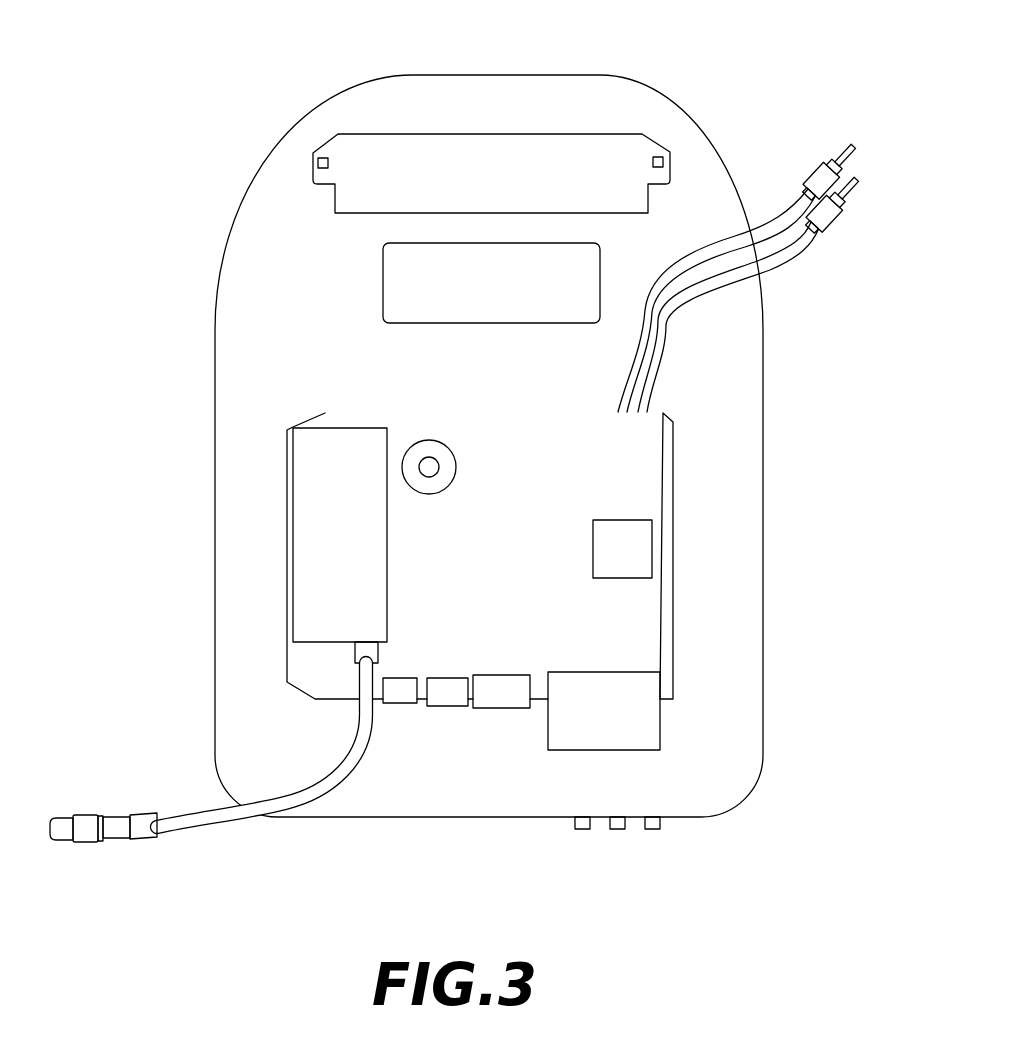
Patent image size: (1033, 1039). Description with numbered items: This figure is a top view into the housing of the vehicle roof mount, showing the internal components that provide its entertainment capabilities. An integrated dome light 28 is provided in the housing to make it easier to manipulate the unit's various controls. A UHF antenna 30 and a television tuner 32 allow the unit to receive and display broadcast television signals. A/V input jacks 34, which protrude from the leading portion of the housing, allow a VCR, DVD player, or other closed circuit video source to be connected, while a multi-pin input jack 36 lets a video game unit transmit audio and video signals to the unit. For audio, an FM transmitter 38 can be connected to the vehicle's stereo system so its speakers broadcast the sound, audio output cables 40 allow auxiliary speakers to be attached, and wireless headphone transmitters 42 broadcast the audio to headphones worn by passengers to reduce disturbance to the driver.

The dome light 28 is at (393, 290).
The UHF antenna 30 is at (397, 695).
The television tuner 32 is at (308, 558).
The A/V input jacks 34 is at (578, 829).
The multi-pin input jack 36 is at (448, 697).
The FM transmitter 38 is at (120, 827).
The audio output cables 40 is at (847, 207).
The wireless headphone transmitters 42 is at (482, 143).